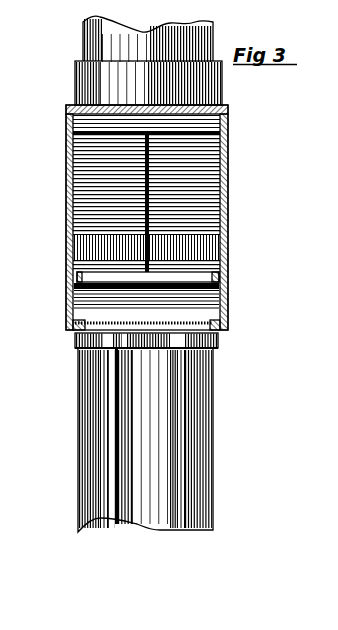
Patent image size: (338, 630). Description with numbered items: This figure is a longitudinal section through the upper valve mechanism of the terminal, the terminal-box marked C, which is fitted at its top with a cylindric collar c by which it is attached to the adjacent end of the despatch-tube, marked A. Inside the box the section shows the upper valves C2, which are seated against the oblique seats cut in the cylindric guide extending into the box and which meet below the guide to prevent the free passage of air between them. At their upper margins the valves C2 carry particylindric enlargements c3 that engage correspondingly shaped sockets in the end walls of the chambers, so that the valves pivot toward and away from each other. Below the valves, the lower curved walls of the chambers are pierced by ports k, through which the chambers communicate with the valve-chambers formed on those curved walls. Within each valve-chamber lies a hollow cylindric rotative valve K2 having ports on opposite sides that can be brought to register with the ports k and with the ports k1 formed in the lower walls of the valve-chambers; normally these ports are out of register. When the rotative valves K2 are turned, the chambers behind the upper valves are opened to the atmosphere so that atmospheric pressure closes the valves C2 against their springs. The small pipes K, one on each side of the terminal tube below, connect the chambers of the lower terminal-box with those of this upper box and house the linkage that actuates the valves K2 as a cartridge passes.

The tube A is at (83, 27).
The cylindric collar c is at (75, 72).
The particylindric enlargements c3 is at (211, 121).
The valves C2 is at (196, 174).
The casing C is at (212, 455).
The ports k is at (202, 278).
The hollow cylindric rotative valves K2 is at (212, 303).
The ports k1 is at (216, 338).
The pipes K is at (152, 515).